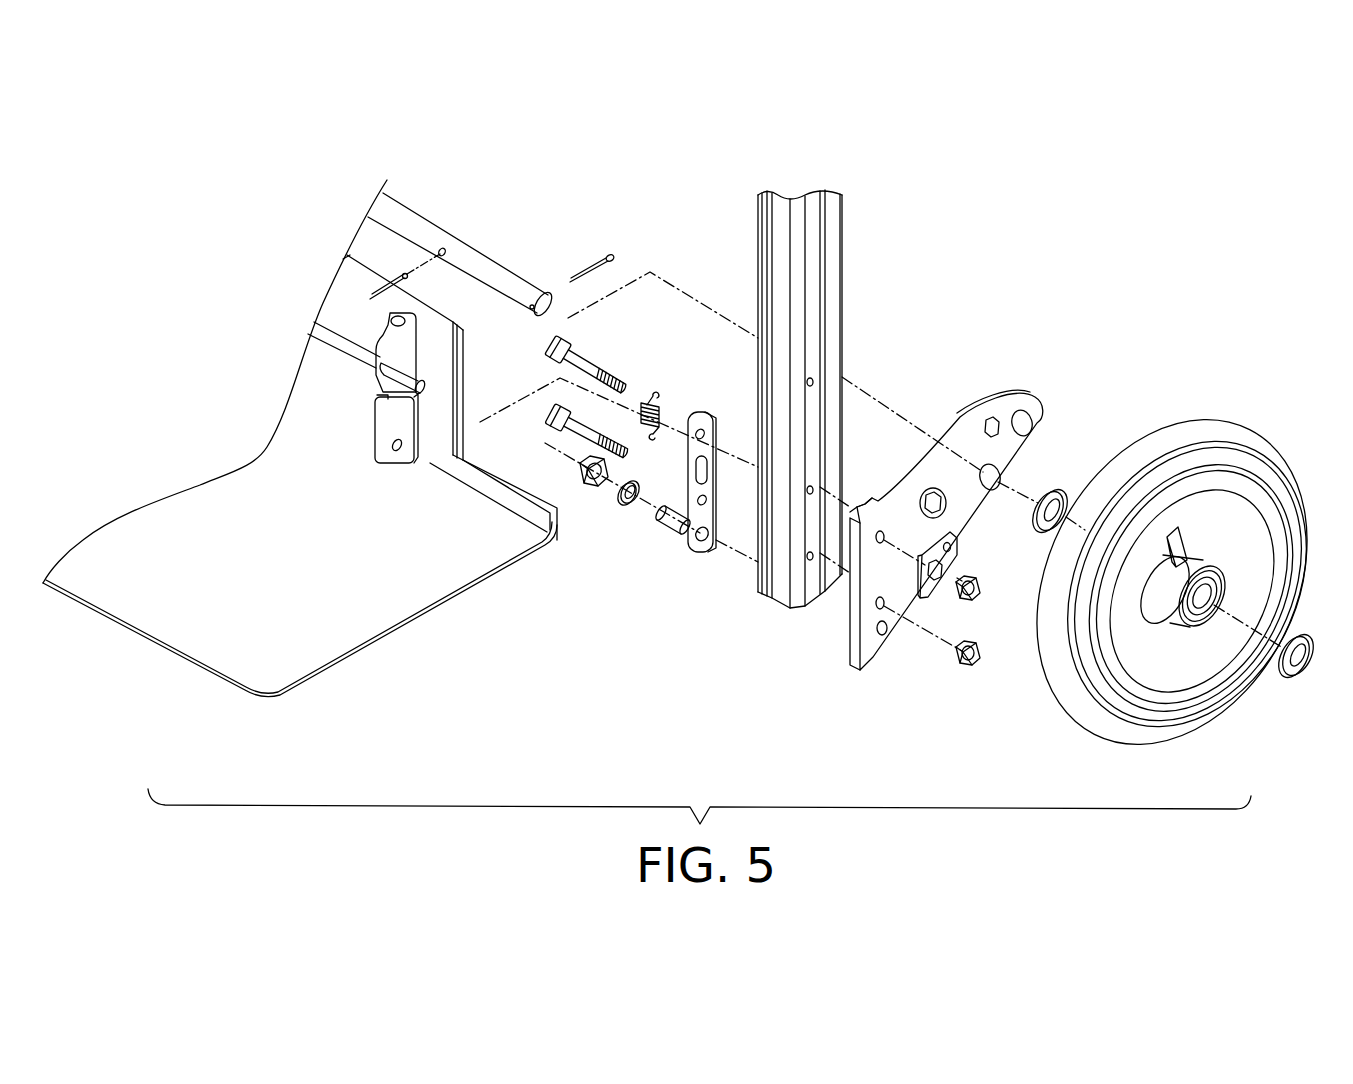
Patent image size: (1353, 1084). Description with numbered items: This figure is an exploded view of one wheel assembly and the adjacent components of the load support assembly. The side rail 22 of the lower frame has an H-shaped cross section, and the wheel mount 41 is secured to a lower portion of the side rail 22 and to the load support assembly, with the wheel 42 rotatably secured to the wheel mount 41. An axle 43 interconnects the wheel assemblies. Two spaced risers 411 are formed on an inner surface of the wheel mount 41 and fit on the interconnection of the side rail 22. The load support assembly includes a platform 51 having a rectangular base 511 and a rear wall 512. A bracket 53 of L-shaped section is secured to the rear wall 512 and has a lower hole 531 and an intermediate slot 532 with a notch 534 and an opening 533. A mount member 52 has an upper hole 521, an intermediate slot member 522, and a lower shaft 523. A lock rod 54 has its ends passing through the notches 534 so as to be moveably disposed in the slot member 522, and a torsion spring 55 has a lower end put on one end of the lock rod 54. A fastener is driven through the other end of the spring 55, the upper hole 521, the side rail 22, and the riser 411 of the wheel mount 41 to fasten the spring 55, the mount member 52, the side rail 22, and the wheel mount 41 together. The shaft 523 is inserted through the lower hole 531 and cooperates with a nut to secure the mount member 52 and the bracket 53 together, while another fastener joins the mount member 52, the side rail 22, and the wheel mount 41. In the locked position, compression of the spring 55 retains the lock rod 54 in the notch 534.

The side rail 22 is at (833, 287).
The wheel mount 41 is at (946, 538).
The riser 411 is at (866, 503).
The wheel 42 is at (1175, 437).
The axle 43 is at (468, 258).
The platform 51 is at (131, 667).
The rectangular base 511 is at (380, 607).
The rear wall 512 is at (345, 300).
The mount member 52 is at (714, 464).
The upper hole 521 is at (708, 433).
The slot member 522 is at (710, 472).
The shaft 523 is at (670, 512).
The bracket 53 is at (394, 426).
The lower hole 531 is at (399, 450).
The intermediate slot 532 is at (364, 500).
The opening 533 is at (377, 398).
The notch 534 is at (378, 368).
The lock rod 54 is at (336, 342).
The torsion spring 55 is at (652, 400).